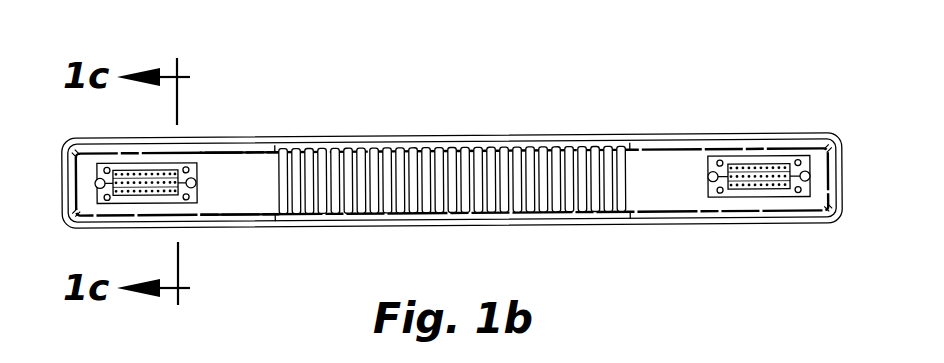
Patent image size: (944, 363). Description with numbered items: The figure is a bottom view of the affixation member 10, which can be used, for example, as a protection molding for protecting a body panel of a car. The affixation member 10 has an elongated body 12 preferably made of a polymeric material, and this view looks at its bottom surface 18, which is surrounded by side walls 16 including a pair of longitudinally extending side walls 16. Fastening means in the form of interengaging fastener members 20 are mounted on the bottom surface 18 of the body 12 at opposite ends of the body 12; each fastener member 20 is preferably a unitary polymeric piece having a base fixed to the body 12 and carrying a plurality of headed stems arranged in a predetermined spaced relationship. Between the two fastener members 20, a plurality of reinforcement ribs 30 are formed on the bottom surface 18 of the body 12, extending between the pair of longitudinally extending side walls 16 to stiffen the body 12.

The affixation member 10 is at (461, 74).
The body 12 is at (523, 132).
The side walls 16 is at (597, 226).
The bottom surface 18 is at (237, 173).
The interengaging fastener member 20 is at (72, 209).
The reinforcement ribs 30 is at (515, 204).